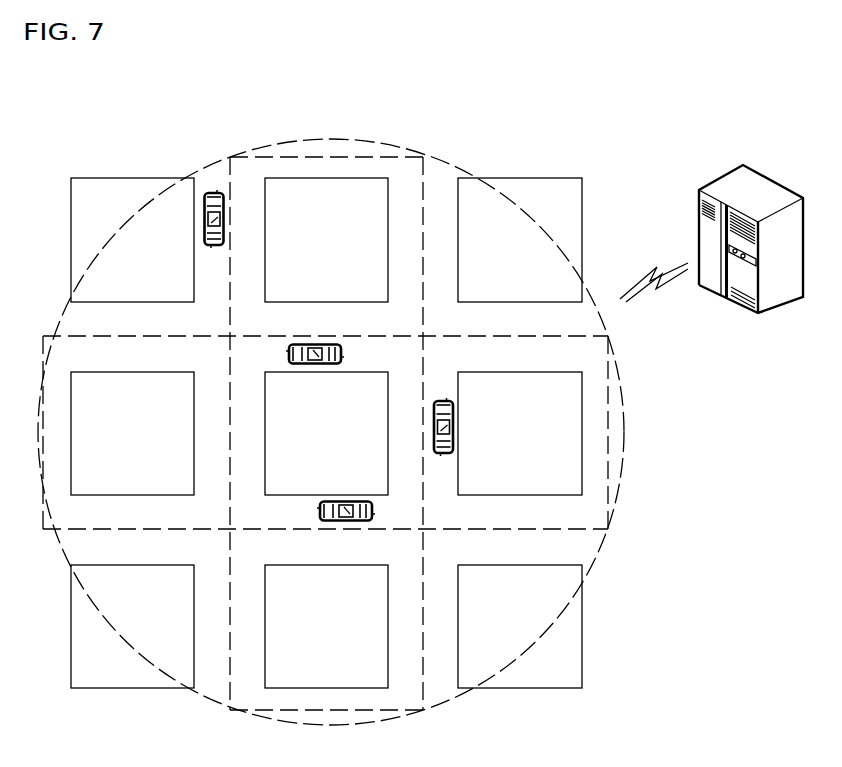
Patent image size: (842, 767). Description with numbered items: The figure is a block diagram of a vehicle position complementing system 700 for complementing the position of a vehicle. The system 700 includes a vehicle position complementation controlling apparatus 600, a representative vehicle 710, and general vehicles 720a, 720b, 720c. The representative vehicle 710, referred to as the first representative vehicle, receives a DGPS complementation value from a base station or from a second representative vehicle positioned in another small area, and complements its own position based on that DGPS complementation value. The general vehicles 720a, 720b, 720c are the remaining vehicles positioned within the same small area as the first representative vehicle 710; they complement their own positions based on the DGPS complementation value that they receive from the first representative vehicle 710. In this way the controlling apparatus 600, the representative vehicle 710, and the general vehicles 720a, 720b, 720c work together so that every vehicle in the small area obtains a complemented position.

The vehicle position complementing system 700 is at (412, 101).
The representative vehicle 710 is at (452, 427).
The general vehicle 720a is at (212, 193).
The general vehicle 720b is at (313, 343).
The general vehicle 720c is at (346, 502).
The vehicle position complementation controlling apparatus 600 is at (732, 183).